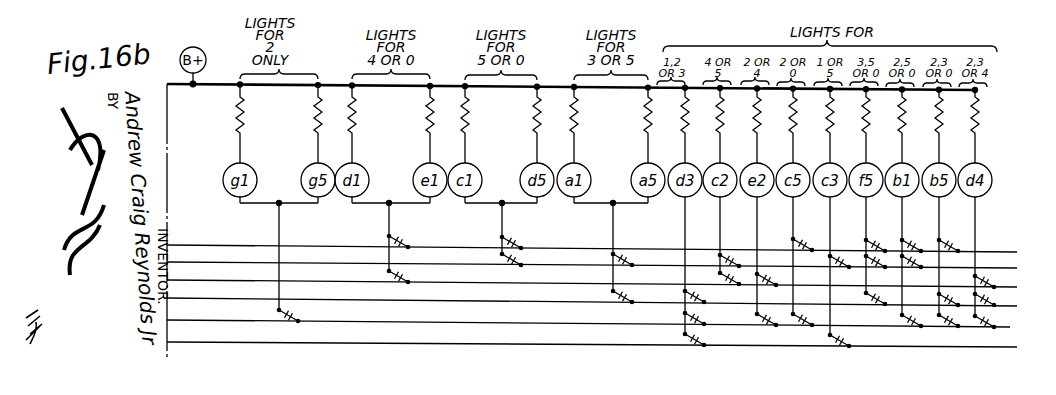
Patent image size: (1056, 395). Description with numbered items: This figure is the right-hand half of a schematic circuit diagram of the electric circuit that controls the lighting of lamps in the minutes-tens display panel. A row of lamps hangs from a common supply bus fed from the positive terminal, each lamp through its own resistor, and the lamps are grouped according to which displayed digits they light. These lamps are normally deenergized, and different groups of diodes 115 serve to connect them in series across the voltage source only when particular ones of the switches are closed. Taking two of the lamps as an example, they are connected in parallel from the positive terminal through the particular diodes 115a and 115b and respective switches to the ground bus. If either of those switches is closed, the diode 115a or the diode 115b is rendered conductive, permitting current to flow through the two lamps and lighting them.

The diode 115a is at (400, 238).
The diode 115b is at (404, 276).
The diodes 115 is at (520, 250).